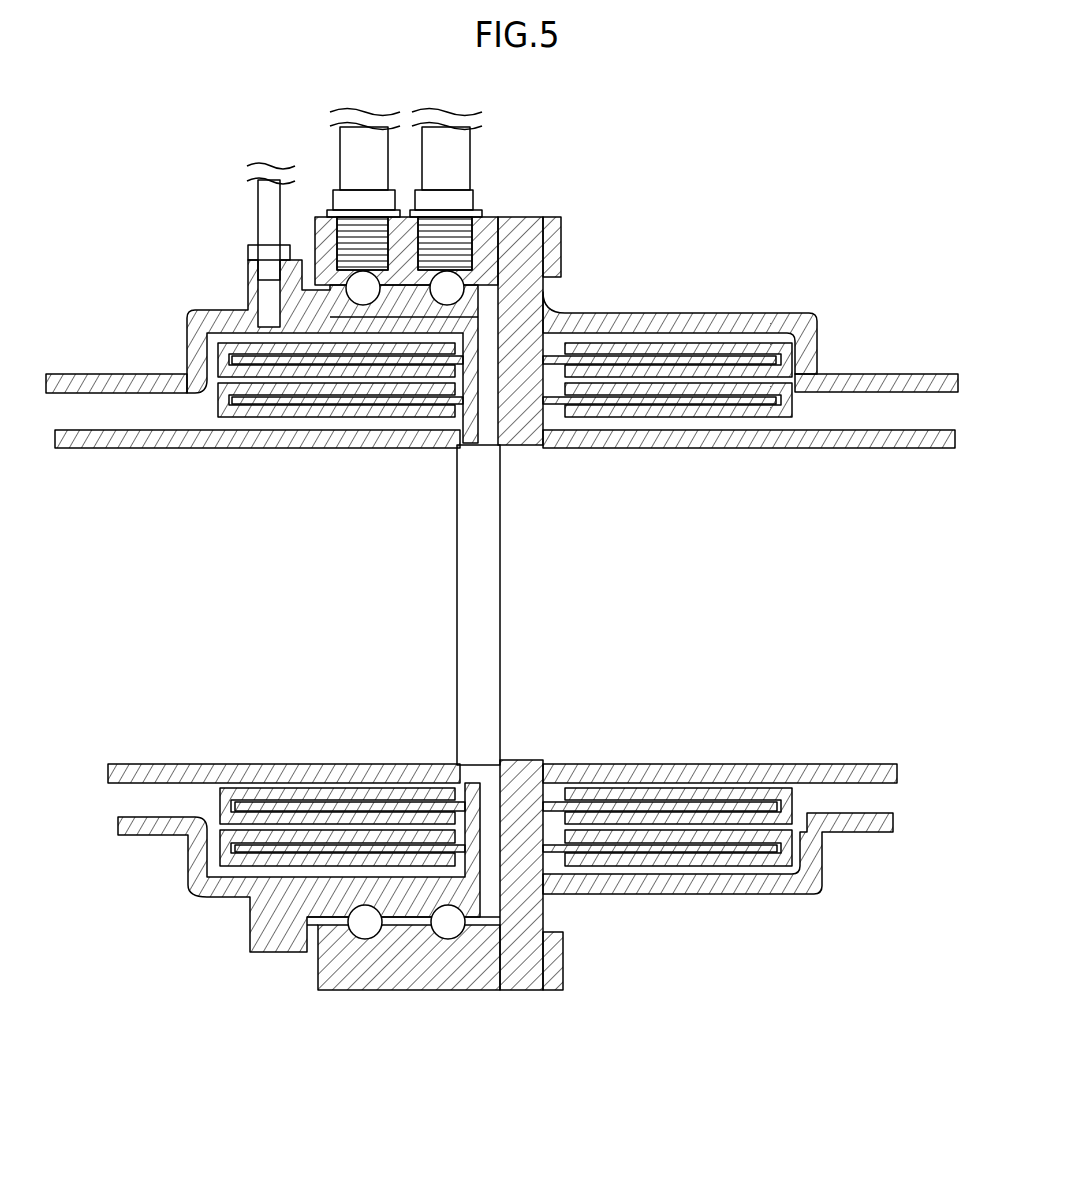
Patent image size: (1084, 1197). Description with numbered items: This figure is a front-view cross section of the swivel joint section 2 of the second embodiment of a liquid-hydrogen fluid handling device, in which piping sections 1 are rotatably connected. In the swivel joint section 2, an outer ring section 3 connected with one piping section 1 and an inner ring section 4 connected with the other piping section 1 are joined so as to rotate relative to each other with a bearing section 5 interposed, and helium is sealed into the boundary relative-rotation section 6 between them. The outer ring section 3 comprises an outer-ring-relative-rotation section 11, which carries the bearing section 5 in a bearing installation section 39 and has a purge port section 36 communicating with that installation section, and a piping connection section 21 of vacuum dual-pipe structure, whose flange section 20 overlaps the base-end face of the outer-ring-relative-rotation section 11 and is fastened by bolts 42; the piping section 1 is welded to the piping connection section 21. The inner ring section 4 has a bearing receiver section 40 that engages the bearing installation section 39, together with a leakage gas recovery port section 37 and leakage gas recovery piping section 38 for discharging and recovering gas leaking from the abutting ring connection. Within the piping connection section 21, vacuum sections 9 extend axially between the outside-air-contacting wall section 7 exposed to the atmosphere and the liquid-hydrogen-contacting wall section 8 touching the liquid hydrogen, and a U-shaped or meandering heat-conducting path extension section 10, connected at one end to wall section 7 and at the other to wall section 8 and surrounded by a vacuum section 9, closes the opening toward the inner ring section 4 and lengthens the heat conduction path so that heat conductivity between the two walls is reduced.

The piping section 1 is at (92, 372).
The swivel joint section 2 is at (690, 185).
The outer ring section 3 is at (648, 302).
The inner ring section 4 is at (187, 303).
The bearing section 5 is at (360, 925).
The boundary relative-rotation section 6 is at (405, 925).
The outside-air-contacting wall section 7 is at (738, 312).
The liquid-hydrogen-contacting wall section 8 is at (735, 440).
The vacuum section 9 is at (302, 427).
The heat-conducting path extension section 10 is at (653, 372).
The outer-ring-relative-rotation section 11 is at (487, 990).
The flange section 20 is at (522, 230).
The piping connection section 21 is at (722, 895).
The purge port section 36 is at (457, 230).
The leakage gas recovery port section 37 is at (247, 246).
The leakage gas recovery piping section 38 is at (352, 318).
The bearing installation section 39 is at (368, 938).
The bearing receiver section 40 is at (365, 905).
The bolt 42 is at (553, 245).